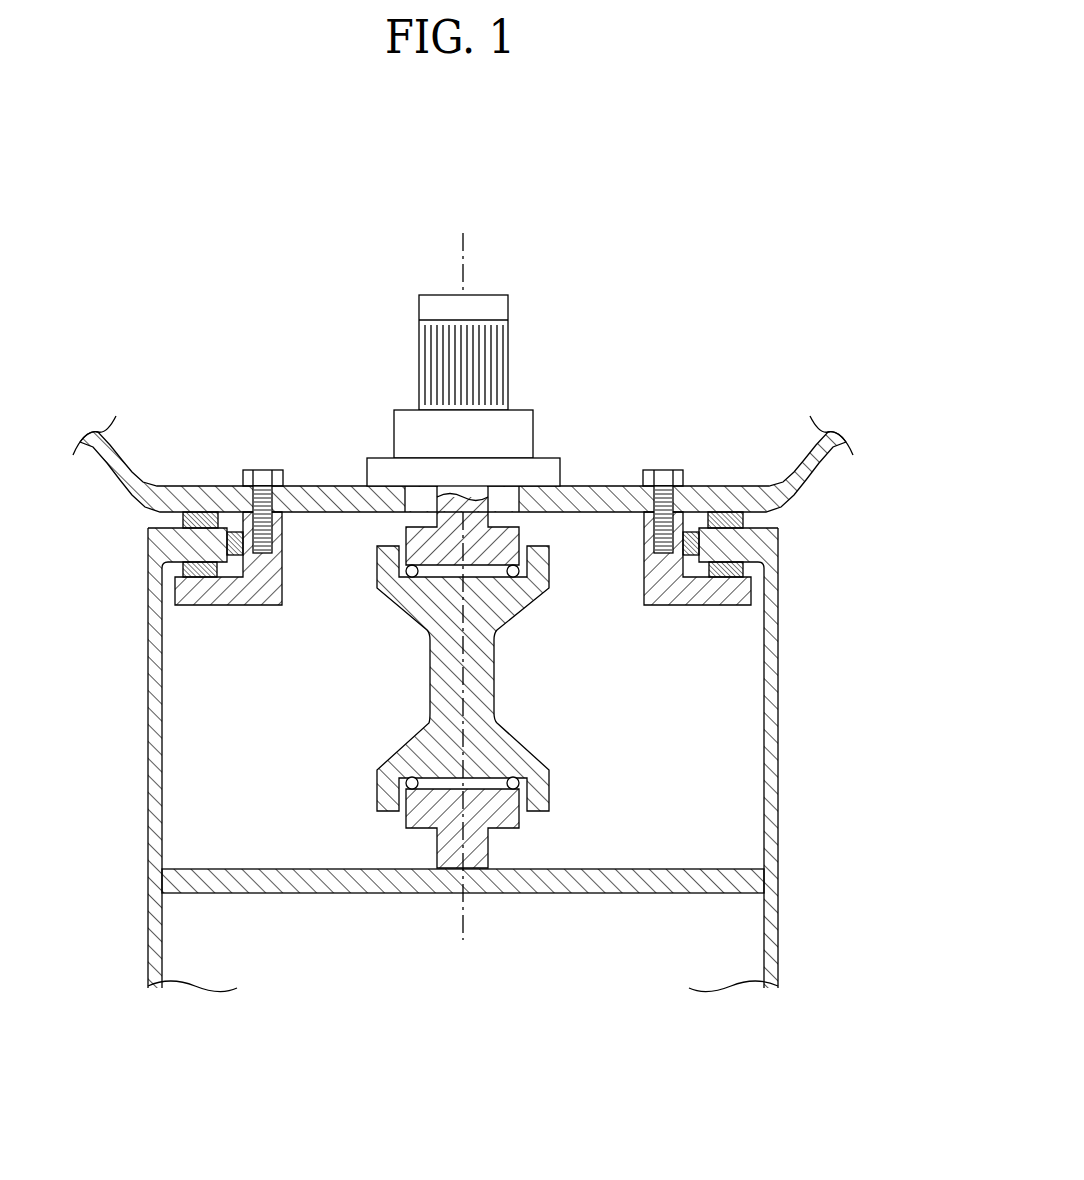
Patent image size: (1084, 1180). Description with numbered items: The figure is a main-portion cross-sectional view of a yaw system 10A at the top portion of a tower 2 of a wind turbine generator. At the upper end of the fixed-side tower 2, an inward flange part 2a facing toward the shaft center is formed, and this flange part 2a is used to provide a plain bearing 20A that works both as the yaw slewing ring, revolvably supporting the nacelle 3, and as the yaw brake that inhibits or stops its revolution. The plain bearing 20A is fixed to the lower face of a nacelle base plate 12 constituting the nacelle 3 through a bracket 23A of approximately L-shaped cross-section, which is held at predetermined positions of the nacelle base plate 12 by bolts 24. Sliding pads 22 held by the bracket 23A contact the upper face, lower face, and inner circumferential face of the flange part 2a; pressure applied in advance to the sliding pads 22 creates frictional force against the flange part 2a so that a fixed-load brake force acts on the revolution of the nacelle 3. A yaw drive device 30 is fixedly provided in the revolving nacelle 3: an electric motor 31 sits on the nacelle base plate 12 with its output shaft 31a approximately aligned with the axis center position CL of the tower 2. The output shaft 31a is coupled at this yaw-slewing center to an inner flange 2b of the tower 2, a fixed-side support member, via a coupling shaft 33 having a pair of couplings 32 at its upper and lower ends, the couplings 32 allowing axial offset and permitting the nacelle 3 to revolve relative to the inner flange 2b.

The yaw system 10A is at (724, 320).
The axis center position CL is at (463, 258).
The tower 2 is at (504, 704).
The flange part 2a is at (217, 547).
The inner flange 2b is at (278, 868).
The nacelle 3 is at (463, 456).
The nacelle base plate 12 is at (325, 487).
The plain bearing 20A is at (420, 548).
The sliding pads 22 is at (183, 518).
The bracket 23A is at (246, 606).
The bolts 24 is at (264, 470).
The yaw drive device 30 is at (492, 427).
The electric motor 31 is at (508, 330).
The output shaft 31a is at (488, 497).
The couplings 32 is at (549, 553).
The coupling shaft 33 is at (494, 680).